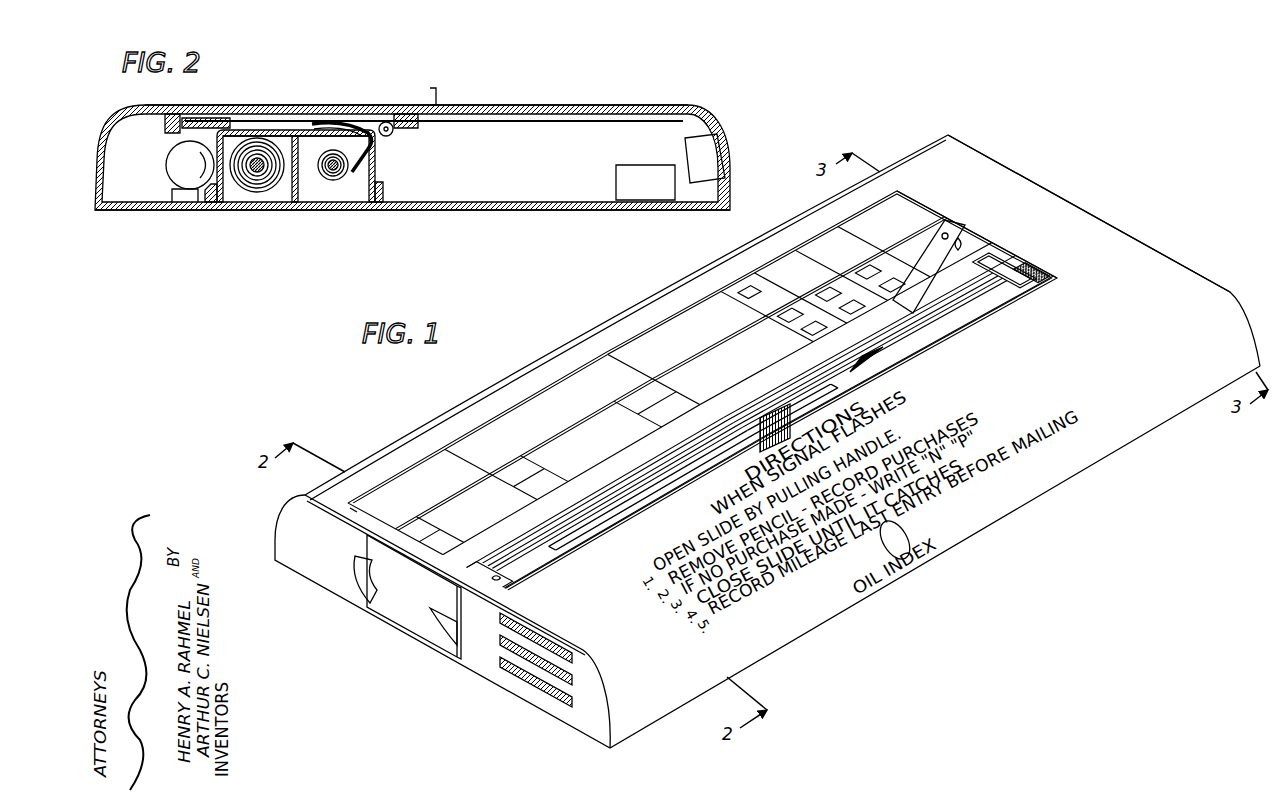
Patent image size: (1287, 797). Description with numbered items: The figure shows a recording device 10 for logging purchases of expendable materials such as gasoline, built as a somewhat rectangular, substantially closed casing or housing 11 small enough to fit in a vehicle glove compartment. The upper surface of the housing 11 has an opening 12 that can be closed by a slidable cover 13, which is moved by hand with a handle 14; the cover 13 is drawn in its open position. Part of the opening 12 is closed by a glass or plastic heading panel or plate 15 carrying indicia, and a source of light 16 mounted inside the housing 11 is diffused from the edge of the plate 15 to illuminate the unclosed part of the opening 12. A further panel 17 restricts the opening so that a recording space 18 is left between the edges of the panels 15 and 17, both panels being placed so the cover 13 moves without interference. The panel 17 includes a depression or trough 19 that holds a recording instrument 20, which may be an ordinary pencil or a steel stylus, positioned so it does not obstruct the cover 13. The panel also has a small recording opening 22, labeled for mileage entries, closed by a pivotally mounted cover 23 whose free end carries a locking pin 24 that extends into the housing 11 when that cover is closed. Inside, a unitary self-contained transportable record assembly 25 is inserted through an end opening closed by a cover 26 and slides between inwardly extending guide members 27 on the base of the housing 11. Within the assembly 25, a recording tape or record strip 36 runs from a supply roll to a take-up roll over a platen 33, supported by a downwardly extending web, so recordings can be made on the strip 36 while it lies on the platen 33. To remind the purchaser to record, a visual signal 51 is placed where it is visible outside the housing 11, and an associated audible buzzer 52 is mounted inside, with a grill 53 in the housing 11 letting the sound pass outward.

In FIG. 2, the recording device 10 is at (484, 204).
In FIG. 1, the recording device 10 is at (1077, 204).
In FIG. 2, the casing or housing 11 is at (587, 204).
In FIG. 1, the casing or housing 11 is at (1089, 213).
In FIG. 2, the opening 12 is at (198, 111).
In FIG. 1, the opening 12 is at (945, 230).
In FIG. 2, the slidable cover 13 is at (614, 105).
In FIG. 1, the slidable cover 13 is at (1042, 283).
In FIG. 2, the handle 14 is at (435, 88).
In FIG. 1, the handle 14 is at (828, 417).
In FIG. 2, the heading panel or plate 15 is at (224, 118).
In FIG. 1, the heading panel or plate 15 is at (622, 374).
In FIG. 2, the source of light 16 is at (172, 164).
In FIG. 2, the panel 17 is at (340, 121).
In FIG. 1, the panel 17 is at (426, 529).
In FIG. 2, the recording space 18 is at (277, 114).
In FIG. 2, the depression or trough 19 is at (397, 132).
In FIG. 1, the depression or trough 19 is at (1022, 275).
In FIG. 1, the recording instrument 20 is at (556, 553).
In FIG. 1, the recording opening 22 is at (1002, 260).
In FIG. 1, the pivotally mounted cover 23 is at (1000, 282).
In FIG. 1, the locking pin 24 is at (962, 242).
In FIG. 2, the transportable record assembly 25 is at (380, 160).
In FIG. 1, the cover 26 is at (407, 597).
In FIG. 2, the guide members 27 is at (200, 205).
In FIG. 2, the platen 33 is at (300, 130).
In FIG. 2, the recording tape or record strip 36 is at (249, 130).
In FIG. 2, the visual signal 51 is at (735, 156).
In FIG. 1, the visual signal 51 is at (906, 525).
In FIG. 2, the buzzer 52 is at (645, 182).
In FIG. 1, the grill 53 is at (535, 678).